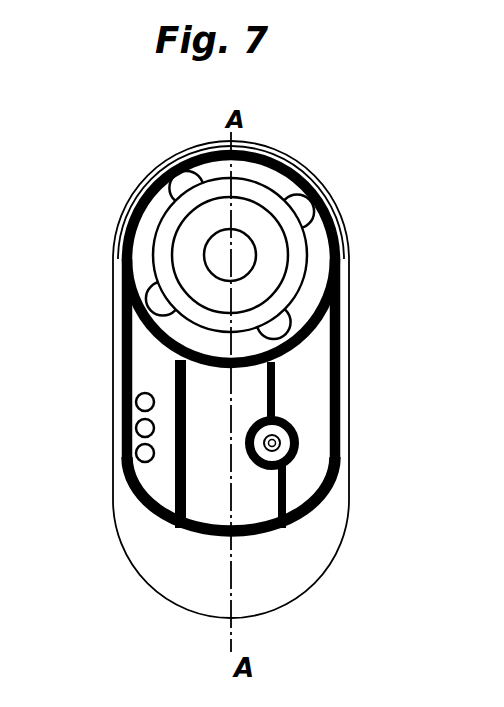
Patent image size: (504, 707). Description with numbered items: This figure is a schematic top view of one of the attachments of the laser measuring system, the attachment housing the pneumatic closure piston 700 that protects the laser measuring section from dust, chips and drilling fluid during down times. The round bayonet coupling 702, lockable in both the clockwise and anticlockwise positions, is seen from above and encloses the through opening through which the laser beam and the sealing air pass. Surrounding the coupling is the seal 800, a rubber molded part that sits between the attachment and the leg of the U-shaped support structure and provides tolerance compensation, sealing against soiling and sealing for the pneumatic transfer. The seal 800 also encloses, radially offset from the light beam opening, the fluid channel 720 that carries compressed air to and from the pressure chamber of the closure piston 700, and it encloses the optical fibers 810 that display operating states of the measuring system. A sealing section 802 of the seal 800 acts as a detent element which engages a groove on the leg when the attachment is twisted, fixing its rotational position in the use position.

The closure piston 700 is at (288, 140).
The bayonet coupling 702 is at (297, 192).
The seal 800 is at (127, 220).
The sealing section 802 is at (173, 383).
The optical fibers 810 is at (145, 452).
The fluid channel 720 is at (280, 442).